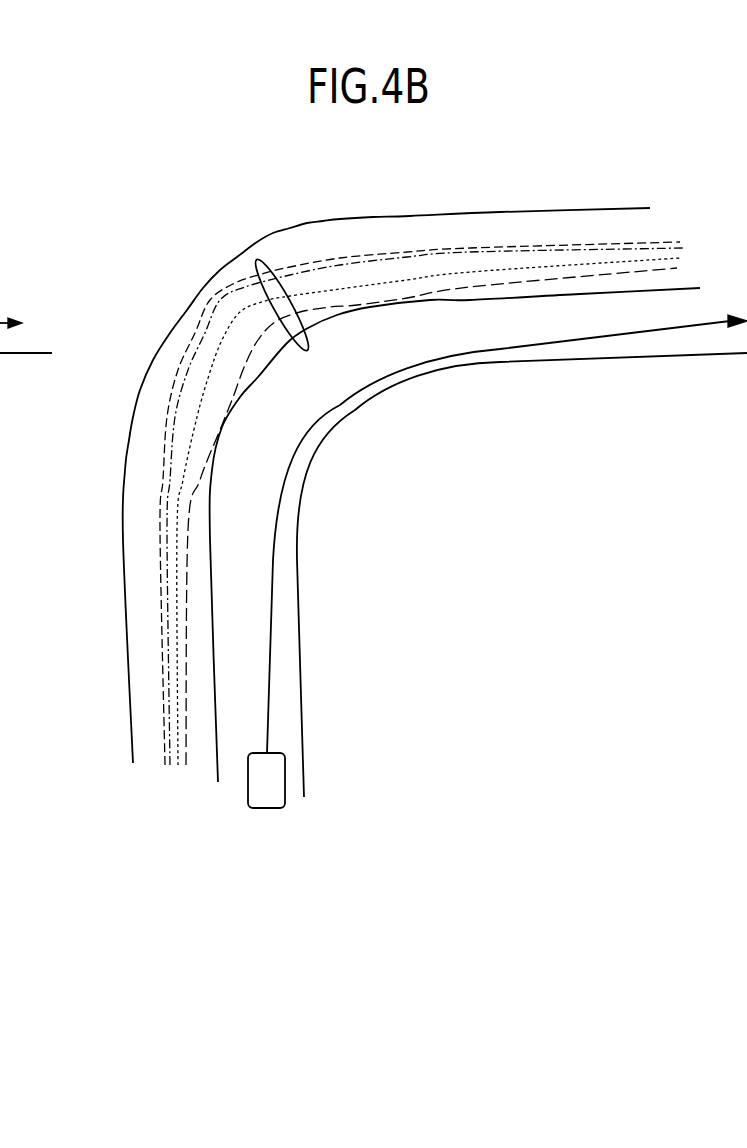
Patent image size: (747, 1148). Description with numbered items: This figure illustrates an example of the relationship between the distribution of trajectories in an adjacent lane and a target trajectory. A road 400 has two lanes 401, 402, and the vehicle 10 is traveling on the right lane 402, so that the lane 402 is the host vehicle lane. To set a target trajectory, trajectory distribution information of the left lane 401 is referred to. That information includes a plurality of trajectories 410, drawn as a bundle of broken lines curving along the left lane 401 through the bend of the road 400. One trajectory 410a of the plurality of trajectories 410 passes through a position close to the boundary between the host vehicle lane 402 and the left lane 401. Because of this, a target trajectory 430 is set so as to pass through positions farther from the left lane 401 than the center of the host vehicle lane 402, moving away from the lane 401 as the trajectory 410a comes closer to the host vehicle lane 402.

The road 400 is at (435, 571).
The left lane 401 is at (135, 800).
The host vehicle lane 402 is at (227, 800).
The trajectories 410 is at (257, 262).
The trajectory 410a is at (195, 476).
The target trajectory 430 is at (585, 340).
The vehicle 10 is at (285, 782).